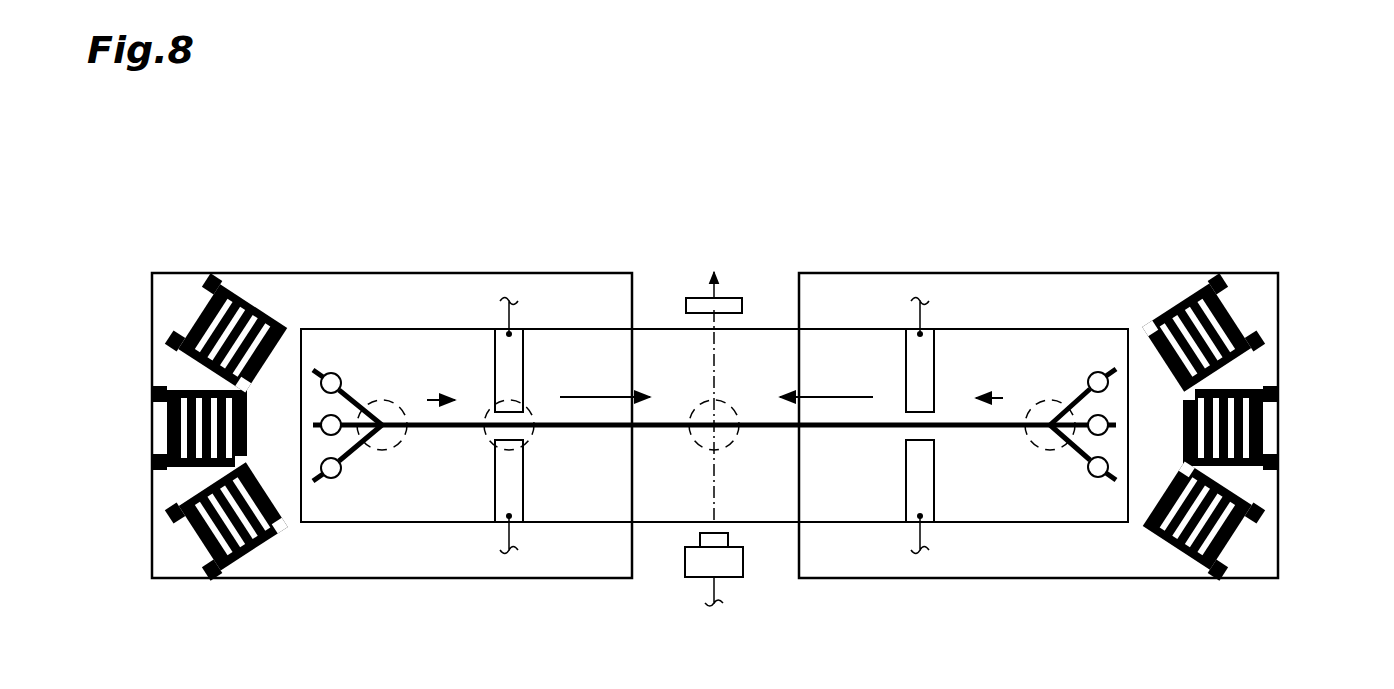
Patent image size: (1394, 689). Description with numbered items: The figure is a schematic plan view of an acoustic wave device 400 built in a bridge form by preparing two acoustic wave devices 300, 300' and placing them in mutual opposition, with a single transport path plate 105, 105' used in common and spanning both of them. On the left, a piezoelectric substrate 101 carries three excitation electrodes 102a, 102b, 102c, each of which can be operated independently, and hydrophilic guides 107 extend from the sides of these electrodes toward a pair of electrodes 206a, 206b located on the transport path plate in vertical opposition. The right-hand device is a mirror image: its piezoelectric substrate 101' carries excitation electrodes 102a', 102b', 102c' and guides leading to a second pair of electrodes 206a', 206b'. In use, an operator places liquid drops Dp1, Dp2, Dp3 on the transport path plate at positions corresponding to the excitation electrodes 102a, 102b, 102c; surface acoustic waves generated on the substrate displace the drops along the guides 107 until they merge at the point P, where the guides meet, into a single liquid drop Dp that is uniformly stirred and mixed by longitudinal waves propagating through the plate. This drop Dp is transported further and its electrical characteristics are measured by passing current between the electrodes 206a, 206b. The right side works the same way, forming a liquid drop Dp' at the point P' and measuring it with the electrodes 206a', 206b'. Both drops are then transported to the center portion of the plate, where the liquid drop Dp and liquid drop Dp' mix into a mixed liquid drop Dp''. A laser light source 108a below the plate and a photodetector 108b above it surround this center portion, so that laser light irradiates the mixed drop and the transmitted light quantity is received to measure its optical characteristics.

The acoustic wave device 400 is at (784, 188).
The piezoelectric substrate 101 is at (392, 399).
The piezoelectric substrate 101' is at (1038, 399).
The acoustic wave device 300 is at (529, 239).
The acoustic wave device 300' is at (895, 237).
The transport path plate 105 is at (714, 401).
The transport path plate 105' is at (1042, 400).
The excitation electrode 102a is at (163, 406).
The excitation electrode 102b is at (265, 520).
The excitation electrode 102c is at (263, 334).
The excitation electrode 102a' is at (1269, 405).
The excitation electrode 102b' is at (1156, 520).
The excitation electrode 102c' is at (1152, 334).
The electrode 206a is at (550, 355).
The electrode 206b is at (550, 497).
The electrode 206a' is at (868, 355).
The electrode 206b' is at (871, 497).
The guide 107 is at (633, 430).
The laser light source 108a is at (727, 577).
The photodetector 108b is at (733, 291).
The liquid drop Dp1 is at (318, 411).
The liquid drop Dp2 is at (356, 466).
The liquid drop Dp3 is at (354, 385).
The liquid drop Dp is at (407, 439).
The liquid drop Dp' is at (1019, 439).
The mixed liquid drop Dp'' is at (767, 463).
The point P is at (421, 389).
The point P' is at (1010, 388).